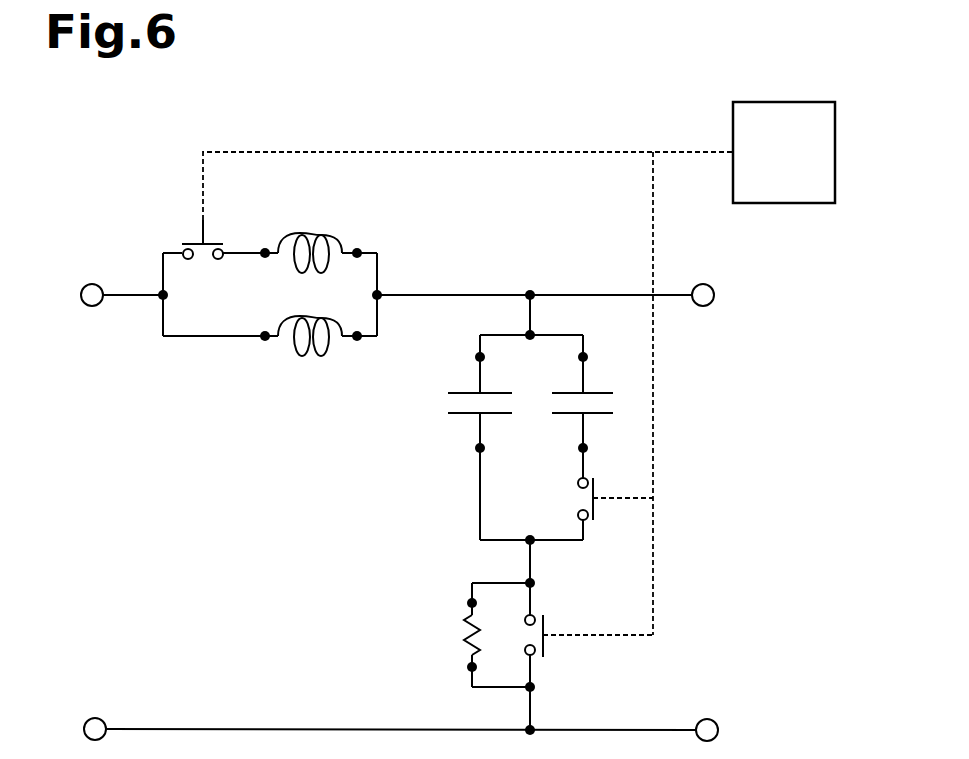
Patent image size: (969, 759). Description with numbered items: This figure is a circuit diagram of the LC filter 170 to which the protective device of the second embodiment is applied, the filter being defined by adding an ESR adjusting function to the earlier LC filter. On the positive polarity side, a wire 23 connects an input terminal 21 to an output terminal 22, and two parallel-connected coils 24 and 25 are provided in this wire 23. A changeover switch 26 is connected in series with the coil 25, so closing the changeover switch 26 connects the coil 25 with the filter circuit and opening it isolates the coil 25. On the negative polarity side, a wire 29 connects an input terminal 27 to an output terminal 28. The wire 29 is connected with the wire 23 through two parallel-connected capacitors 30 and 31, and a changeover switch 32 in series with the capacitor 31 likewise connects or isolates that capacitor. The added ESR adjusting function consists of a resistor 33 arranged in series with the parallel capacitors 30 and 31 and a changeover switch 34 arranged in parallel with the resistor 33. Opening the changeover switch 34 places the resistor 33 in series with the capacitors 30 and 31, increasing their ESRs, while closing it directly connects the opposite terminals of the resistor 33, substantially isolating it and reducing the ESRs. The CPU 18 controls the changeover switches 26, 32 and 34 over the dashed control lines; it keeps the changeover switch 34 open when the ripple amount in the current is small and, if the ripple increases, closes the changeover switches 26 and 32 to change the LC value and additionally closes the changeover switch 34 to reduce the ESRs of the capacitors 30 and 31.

The LC filter 170 is at (131, 151).
The central processing unit 18 is at (800, 205).
The input terminal on the positive polarity side 21 is at (92, 284).
The output terminal on the positive polarity side 22 is at (704, 284).
The wire on the positive polarity side 23 is at (445, 293).
The coil 24 is at (330, 317).
The coil 25 is at (330, 234).
The changeover switch 26 is at (213, 243).
The input terminal on the negative polarity side 27 is at (95, 718).
The output terminal on the negative polarity side 28 is at (708, 718).
The wire on the negative polarity side 29 is at (245, 727).
The capacitor 30 is at (463, 416).
The capacitor 31 is at (563, 416).
The changeover switch 32 is at (598, 517).
The resistor 33 is at (463, 625).
The changeover switch 34 is at (547, 648).